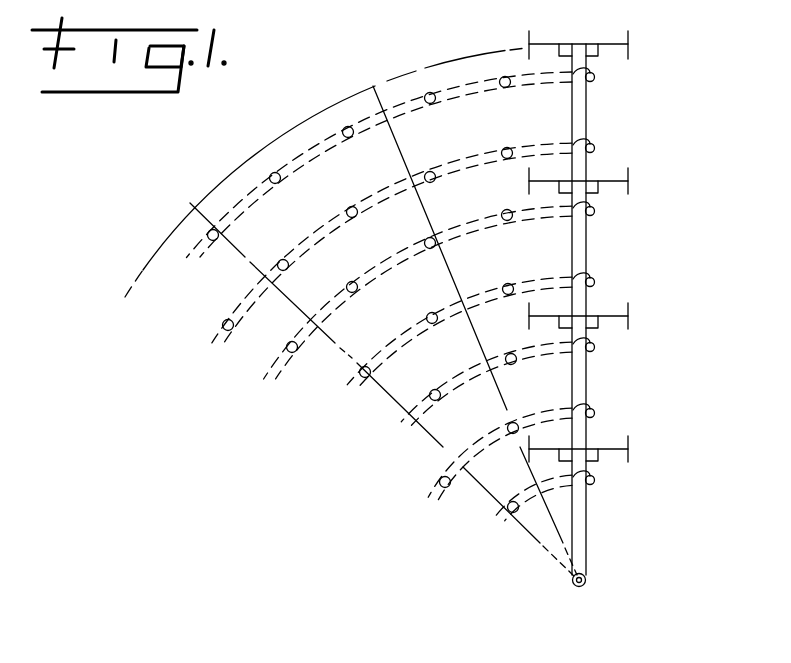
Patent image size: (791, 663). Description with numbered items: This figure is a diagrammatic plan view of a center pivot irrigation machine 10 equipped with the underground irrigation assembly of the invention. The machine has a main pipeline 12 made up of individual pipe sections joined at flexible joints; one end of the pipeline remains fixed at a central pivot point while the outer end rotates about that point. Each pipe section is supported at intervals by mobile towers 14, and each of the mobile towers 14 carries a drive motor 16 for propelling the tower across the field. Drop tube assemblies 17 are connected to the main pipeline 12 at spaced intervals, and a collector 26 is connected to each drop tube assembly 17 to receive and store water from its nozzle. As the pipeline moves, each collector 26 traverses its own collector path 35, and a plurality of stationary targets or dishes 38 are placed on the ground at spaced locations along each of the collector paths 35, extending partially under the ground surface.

The irrigation machine 10 is at (667, 103).
The main pipeline 12 is at (583, 256).
The mobile towers 14 is at (629, 38).
The drive motor 16 is at (592, 189).
The drop tube assemblies 17 is at (597, 404).
The collector 26 is at (592, 348).
The collector path 35 is at (228, 338).
The stationary targets or dishes 38 is at (420, 401).